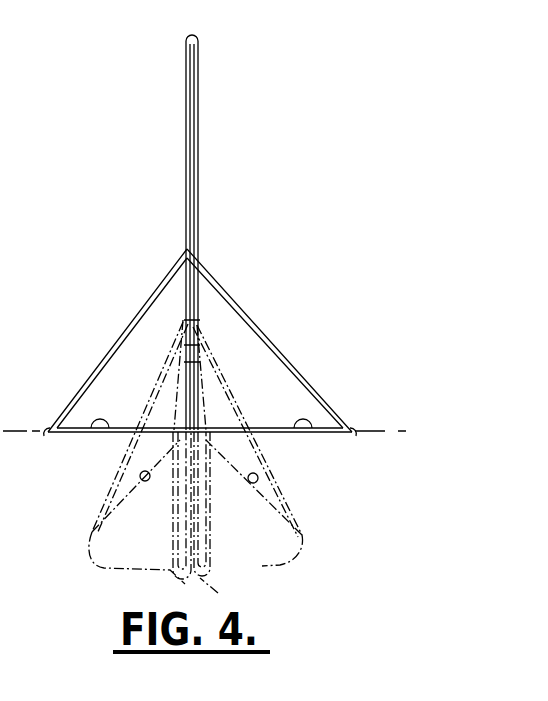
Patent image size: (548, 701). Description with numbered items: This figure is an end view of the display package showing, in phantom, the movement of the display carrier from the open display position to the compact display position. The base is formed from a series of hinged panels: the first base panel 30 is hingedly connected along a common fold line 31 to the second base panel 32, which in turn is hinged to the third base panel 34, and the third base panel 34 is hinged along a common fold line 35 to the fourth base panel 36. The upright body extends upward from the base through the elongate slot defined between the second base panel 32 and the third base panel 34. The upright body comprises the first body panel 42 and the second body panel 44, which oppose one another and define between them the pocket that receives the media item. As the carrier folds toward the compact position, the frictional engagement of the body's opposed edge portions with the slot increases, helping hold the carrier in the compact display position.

The first base panel 30 is at (95, 432).
The common fold line 31 is at (45, 428).
The second base panel 32 is at (120, 338).
The third base panel 34 is at (256, 322).
The common fold line 35 is at (350, 430).
The fourth base panel 36 is at (308, 433).
The first body panel 42 is at (186, 172).
The second body panel 44 is at (199, 135).